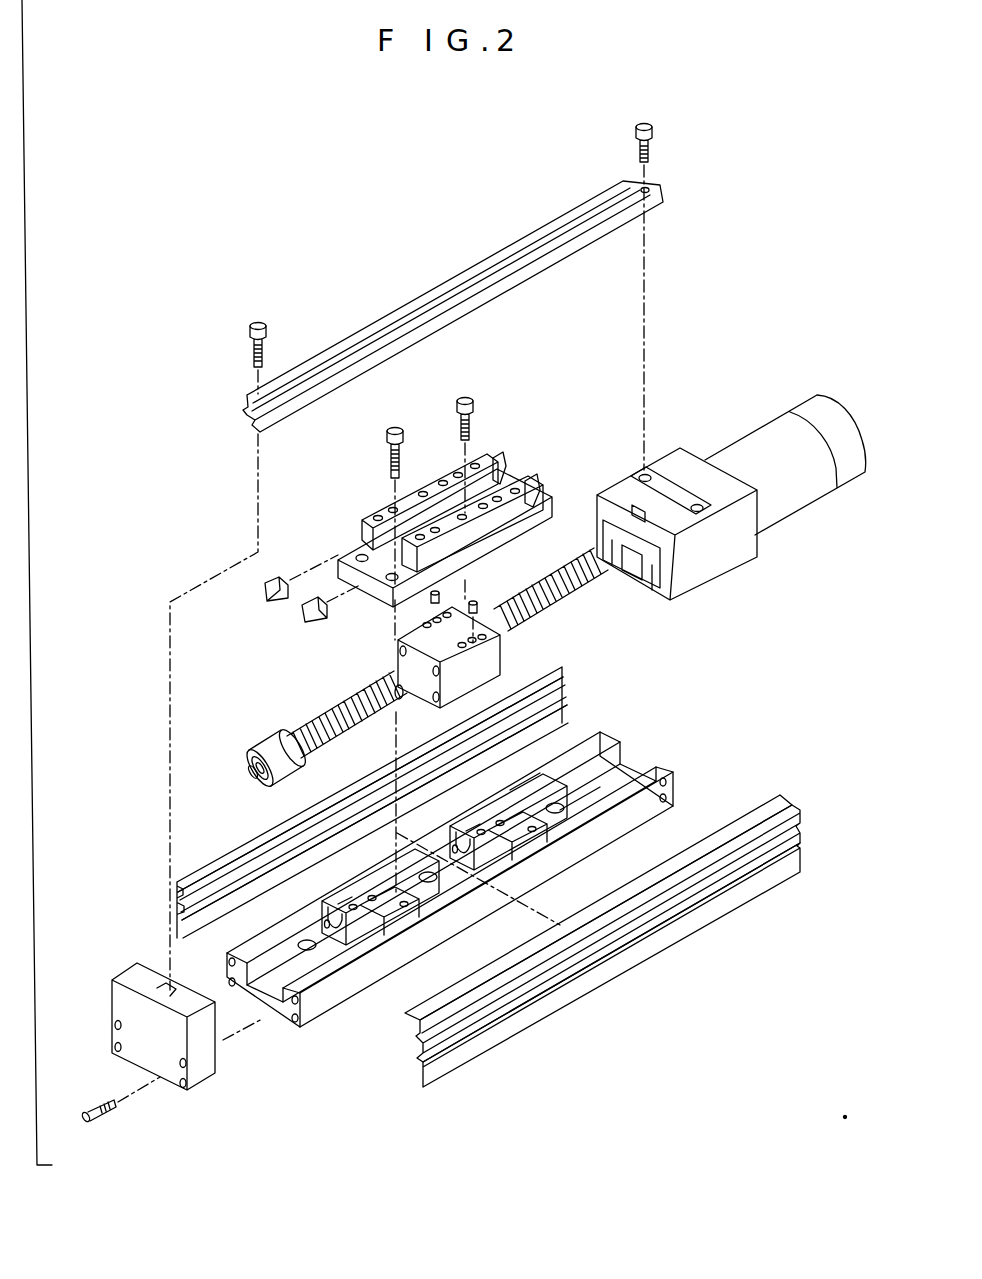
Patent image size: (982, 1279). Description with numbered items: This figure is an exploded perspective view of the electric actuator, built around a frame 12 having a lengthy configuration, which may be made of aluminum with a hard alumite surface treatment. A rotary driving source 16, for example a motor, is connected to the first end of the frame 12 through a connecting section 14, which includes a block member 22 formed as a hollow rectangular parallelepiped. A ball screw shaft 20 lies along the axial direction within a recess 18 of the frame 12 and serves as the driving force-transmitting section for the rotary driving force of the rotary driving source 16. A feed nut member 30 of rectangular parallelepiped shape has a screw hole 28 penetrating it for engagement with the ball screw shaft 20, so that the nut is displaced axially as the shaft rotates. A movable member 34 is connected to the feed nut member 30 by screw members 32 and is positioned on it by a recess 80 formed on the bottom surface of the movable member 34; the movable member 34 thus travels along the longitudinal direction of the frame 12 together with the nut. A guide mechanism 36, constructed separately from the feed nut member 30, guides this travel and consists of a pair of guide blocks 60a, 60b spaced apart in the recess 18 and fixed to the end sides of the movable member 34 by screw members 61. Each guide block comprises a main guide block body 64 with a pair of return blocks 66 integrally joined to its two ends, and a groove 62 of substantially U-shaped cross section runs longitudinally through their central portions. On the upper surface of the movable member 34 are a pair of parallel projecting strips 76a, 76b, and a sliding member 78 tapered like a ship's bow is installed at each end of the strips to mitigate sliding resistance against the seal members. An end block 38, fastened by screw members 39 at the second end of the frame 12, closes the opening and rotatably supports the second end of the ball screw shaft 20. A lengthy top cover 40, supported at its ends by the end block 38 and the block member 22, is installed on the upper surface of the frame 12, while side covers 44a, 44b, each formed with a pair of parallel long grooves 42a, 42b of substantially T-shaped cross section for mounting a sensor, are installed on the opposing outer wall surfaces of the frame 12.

The frame 12 is at (317, 995).
The connecting section 14 is at (731, 525).
The rotary driving source 16 is at (793, 492).
The recess 18 is at (598, 783).
The ball screw shaft 20 is at (337, 713).
The block member 22 is at (728, 562).
The screw hole 28 is at (400, 703).
The feed nut member 30 is at (487, 663).
The screw members 32 is at (466, 398).
The movable member 34 is at (451, 485).
The guide mechanism 36 is at (522, 776).
The end block 38 is at (115, 1000).
The screw members 39 is at (102, 1114).
The top cover 40 is at (447, 303).
The long groove 42a is at (177, 890).
The long groove 42b is at (178, 915).
The side cover 44a is at (693, 920).
The side cover 44b is at (232, 853).
The guide block 60a is at (495, 908).
The guide block 60b is at (565, 858).
The screw members 61 is at (388, 430).
The groove 62 is at (490, 818).
The main guide block body 64 is at (587, 853).
The return blocks 66 is at (617, 832).
The projecting strip 76a is at (418, 473).
The projecting strip 76b is at (473, 540).
The sliding member 78 is at (493, 448).
The recess 80 is at (562, 596).